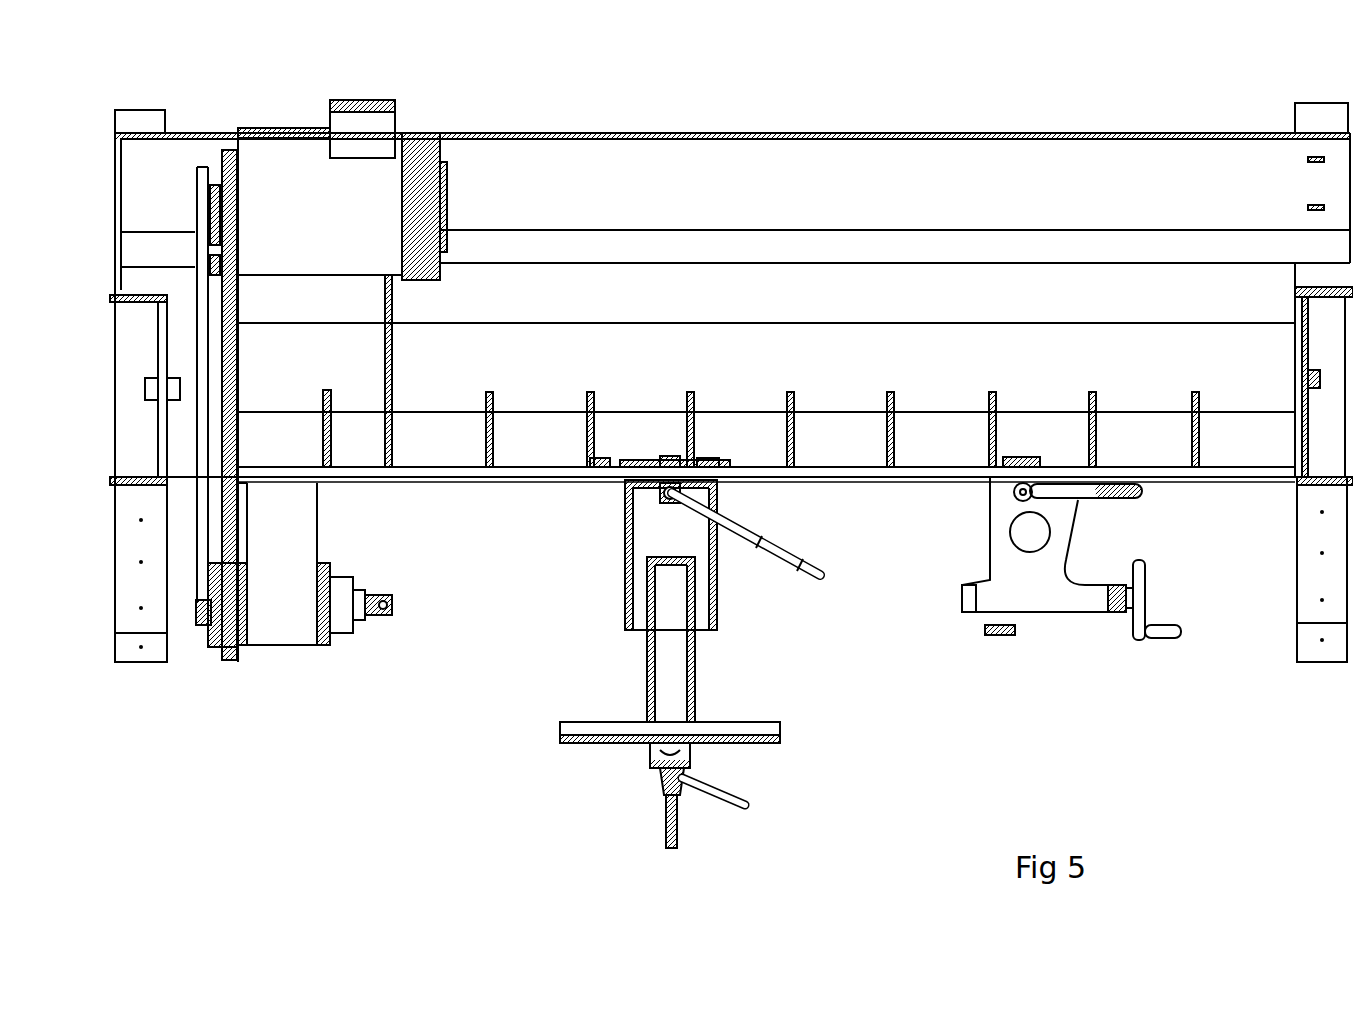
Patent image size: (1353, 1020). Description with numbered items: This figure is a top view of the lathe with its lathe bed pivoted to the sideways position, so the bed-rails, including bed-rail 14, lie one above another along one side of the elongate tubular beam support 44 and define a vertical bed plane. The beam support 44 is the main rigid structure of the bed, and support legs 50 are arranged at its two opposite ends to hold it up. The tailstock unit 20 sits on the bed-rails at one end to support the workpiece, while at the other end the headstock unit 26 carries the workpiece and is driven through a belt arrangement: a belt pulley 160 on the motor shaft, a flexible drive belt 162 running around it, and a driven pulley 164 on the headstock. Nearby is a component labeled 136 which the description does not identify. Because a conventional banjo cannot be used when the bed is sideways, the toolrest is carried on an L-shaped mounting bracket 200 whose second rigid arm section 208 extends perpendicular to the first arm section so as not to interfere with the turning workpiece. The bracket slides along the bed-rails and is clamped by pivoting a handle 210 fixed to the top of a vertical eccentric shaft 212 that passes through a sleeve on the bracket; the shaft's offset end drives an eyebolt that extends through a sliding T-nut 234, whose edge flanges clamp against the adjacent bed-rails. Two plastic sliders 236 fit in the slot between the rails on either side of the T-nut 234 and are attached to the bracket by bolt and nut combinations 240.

The bed rail 14 is at (428, 480).
The tailstock unit 20 is at (1050, 582).
The headstock unit 26 is at (285, 605).
The beam support 44 is at (885, 350).
The support legs 50 is at (135, 605).
The housing block 136 is at (293, 125).
The belt pulley 160 is at (213, 182).
The drive belt 162 is at (197, 195).
The driven pulley 164 is at (196, 618).
The mounting bracket 200 is at (650, 530).
The second rigid arm section 208 is at (720, 560).
The handle 210 is at (732, 528).
The eccentric shaft 212 is at (660, 497).
The T-nut 234 is at (678, 455).
The plastic sliders 236 is at (718, 452).
The bolt and nut combinations 240 is at (598, 455).